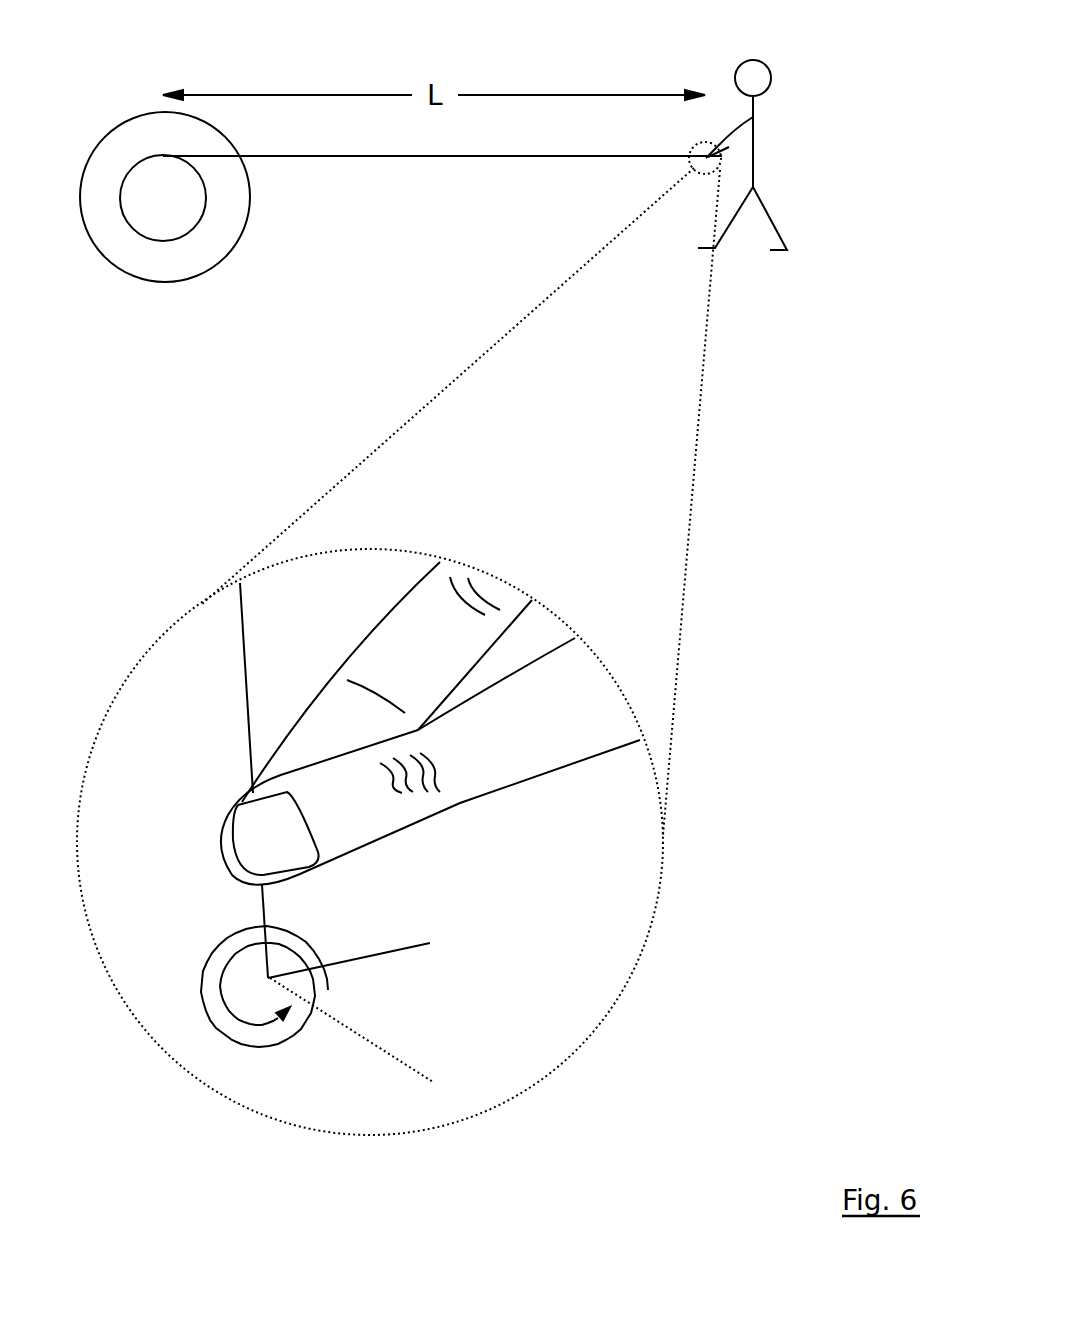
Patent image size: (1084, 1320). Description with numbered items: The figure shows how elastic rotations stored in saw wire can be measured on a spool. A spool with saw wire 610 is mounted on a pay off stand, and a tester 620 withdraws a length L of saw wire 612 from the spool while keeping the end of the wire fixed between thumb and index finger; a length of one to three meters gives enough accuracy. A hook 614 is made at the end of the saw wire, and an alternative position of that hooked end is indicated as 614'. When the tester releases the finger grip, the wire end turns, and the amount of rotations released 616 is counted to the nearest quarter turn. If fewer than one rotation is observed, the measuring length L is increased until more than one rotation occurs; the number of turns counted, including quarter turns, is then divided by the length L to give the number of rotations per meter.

The spool with saw wire 610 is at (170, 228).
The saw wire 612 is at (442, 195).
The hook 614 is at (372, 796).
The thread segment in alternative position 614' is at (389, 1072).
The rotations released 616 is at (222, 1042).
The tester 620 is at (722, 92).